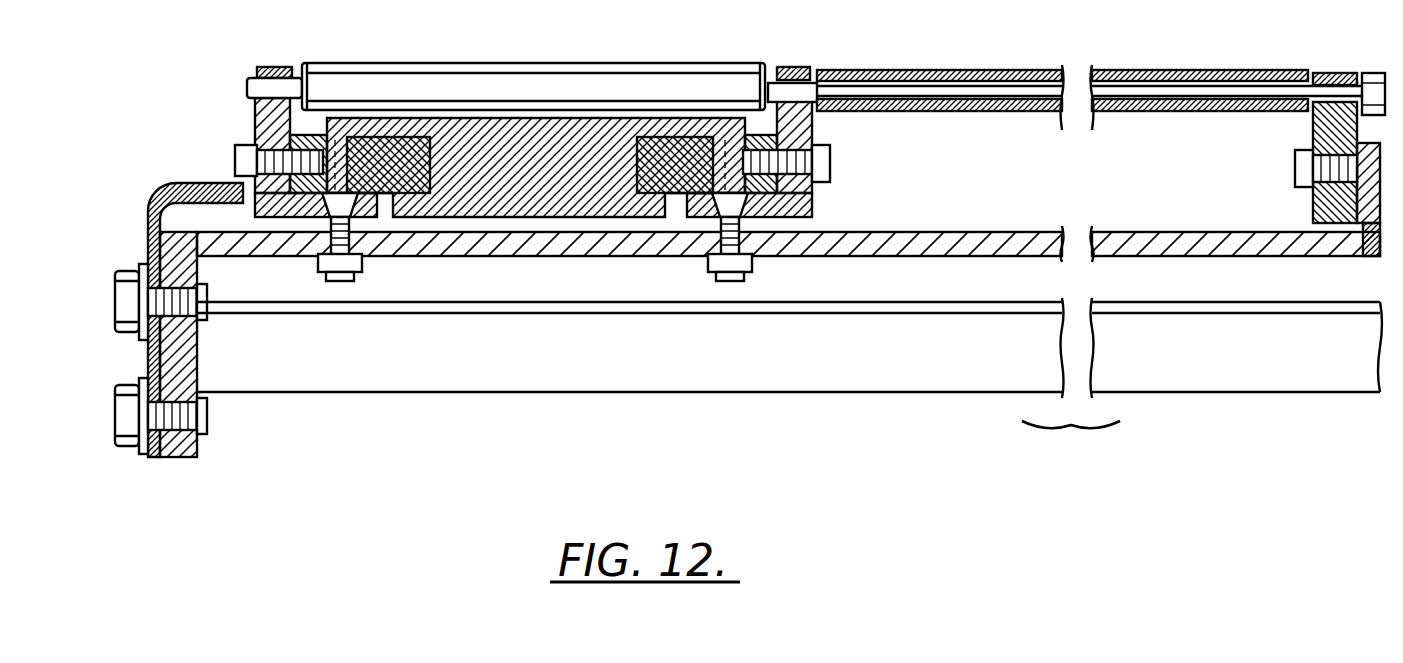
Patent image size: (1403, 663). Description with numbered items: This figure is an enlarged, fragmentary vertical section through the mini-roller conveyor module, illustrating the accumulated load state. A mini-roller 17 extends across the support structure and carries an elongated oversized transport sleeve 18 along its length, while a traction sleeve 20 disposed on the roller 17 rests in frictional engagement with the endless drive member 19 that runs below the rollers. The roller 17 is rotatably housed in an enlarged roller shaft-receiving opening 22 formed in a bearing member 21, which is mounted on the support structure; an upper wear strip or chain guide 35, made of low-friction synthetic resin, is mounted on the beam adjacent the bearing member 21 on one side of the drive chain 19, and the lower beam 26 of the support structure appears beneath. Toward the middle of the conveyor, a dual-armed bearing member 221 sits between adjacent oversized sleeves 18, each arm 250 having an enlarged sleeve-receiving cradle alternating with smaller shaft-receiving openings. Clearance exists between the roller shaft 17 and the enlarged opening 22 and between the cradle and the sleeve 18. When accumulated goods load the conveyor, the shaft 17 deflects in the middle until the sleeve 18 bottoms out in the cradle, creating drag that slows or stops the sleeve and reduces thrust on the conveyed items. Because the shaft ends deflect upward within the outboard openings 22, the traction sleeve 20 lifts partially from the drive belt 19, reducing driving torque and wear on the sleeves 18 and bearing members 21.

The mini-roller 17 is at (954, 70).
The oversized transport sleeve 18 is at (1181, 72).
The endless drive member 19 is at (532, 128).
The traction sleeve 20 is at (617, 72).
The bearing member 21 is at (262, 131).
The roller shaft-receiving enlarged opening 22 is at (267, 106).
The lower beam 26 is at (590, 256).
The upper wear strip or chain guide 35 is at (383, 147).
The bearing member 221 is at (1313, 194).
The arm 250 is at (1313, 128).